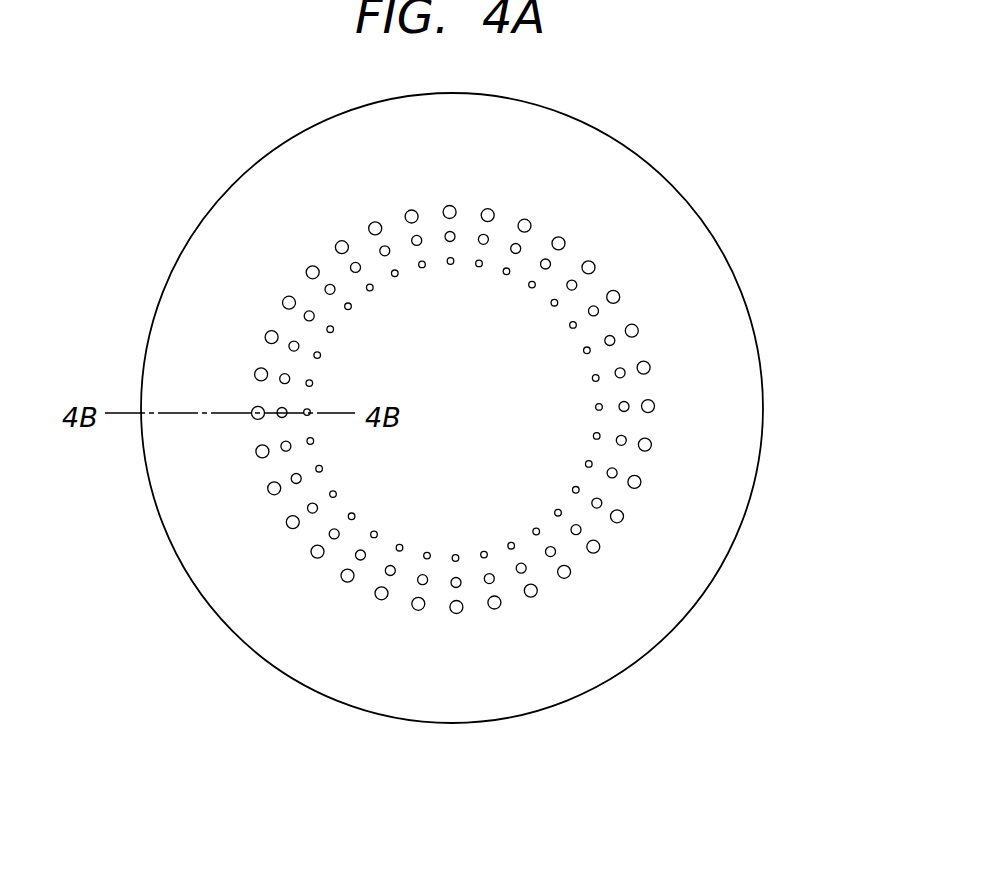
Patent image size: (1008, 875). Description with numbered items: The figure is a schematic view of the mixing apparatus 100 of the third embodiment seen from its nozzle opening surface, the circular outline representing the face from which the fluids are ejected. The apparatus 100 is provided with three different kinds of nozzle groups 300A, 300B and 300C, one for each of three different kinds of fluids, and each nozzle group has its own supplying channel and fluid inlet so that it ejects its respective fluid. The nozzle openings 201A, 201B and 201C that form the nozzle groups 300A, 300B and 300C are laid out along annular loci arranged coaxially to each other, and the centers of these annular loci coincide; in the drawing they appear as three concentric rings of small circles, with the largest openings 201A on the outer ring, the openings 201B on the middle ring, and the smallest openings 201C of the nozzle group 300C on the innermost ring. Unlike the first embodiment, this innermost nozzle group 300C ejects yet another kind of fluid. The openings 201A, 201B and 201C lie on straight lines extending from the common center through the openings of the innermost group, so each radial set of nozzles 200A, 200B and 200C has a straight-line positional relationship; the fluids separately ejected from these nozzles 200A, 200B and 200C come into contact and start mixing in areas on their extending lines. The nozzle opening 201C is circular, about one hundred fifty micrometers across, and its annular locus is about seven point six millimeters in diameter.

The mixing apparatus 100 is at (697, 222).
The nozzle opening 201A is at (636, 326).
The nozzle opening 201B is at (624, 369).
The nozzle opening 201C is at (602, 405).
The nozzle 200A is at (531, 597).
The nozzle 200B is at (521, 573).
The nozzle 200C is at (511, 549).
The nozzle group 300A is at (377, 593).
The nozzle group 300B is at (625, 443).
The nozzle group 300C is at (455, 554).